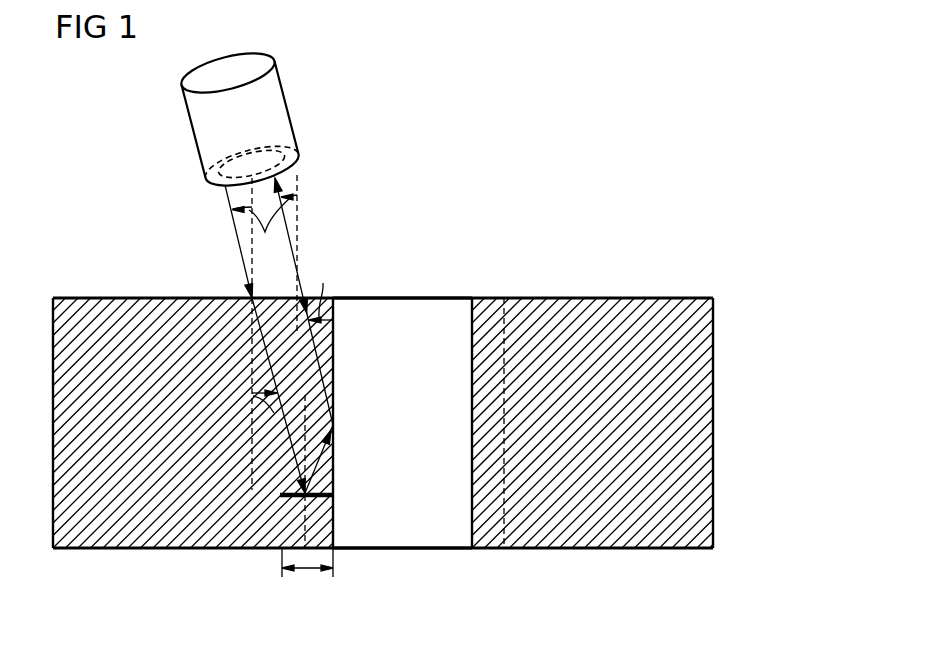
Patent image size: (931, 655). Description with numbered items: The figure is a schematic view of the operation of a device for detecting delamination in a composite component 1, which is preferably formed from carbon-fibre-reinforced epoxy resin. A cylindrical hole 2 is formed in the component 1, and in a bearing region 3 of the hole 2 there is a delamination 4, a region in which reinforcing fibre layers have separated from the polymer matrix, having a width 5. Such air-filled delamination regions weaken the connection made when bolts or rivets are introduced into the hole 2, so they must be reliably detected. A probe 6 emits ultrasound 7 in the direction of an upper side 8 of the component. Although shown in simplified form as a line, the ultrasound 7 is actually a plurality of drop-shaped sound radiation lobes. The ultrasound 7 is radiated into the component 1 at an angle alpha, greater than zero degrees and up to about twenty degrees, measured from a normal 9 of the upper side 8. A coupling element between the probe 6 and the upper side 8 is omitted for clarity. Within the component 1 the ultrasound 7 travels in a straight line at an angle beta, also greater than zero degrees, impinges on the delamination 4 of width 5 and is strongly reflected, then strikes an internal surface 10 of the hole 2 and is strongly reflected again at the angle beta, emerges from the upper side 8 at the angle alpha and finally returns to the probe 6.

The component 1 is at (537, 298).
The cylindrical hole 2 is at (436, 298).
The bearing region 3 is at (488, 548).
The delamination 4 is at (290, 495).
The width 5 is at (306, 572).
The probe 6 is at (194, 133).
The ultrasound 7 is at (234, 223).
The upper side of the component 8 is at (603, 296).
The normal 9 is at (298, 240).
The internal surface of the hole 10 is at (334, 352).